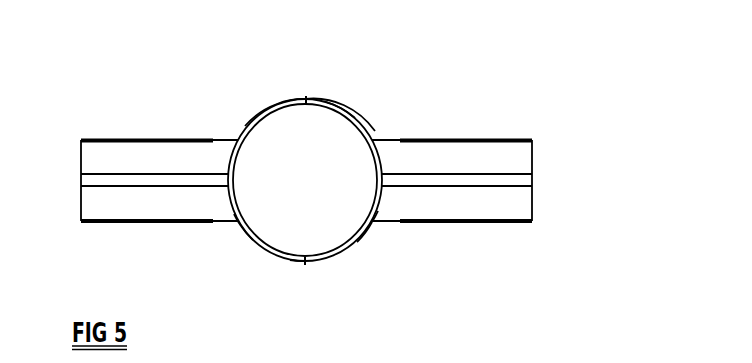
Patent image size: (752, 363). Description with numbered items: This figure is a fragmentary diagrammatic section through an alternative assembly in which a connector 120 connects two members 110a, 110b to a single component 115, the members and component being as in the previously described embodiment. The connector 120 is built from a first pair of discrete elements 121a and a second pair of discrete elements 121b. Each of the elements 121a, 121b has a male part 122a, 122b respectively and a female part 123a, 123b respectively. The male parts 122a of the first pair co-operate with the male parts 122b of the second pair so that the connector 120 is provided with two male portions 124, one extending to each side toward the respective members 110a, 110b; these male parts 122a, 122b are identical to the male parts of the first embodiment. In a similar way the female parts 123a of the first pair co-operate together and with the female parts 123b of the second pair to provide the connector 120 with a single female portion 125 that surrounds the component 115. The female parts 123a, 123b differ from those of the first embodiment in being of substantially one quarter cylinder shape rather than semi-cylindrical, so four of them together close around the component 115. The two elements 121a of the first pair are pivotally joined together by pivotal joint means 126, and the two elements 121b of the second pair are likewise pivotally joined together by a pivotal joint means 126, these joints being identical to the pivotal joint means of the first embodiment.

The component 115 is at (331, 108).
The connector 120 is at (376, 124).
The first pair of discrete elements 121a is at (387, 65).
The second pair of discrete elements 121b is at (425, 281).
The female part 123a is at (453, 66).
The female part 123b is at (445, 244).
The female portion 125 is at (290, 263).
The pivotal joint means 126 is at (306, 96).
The member 110a is at (460, 140).
The member 110b is at (145, 140).
The male part 122a is at (585, 153).
The male part 122b is at (586, 216).
The male portions 124 is at (122, 200).